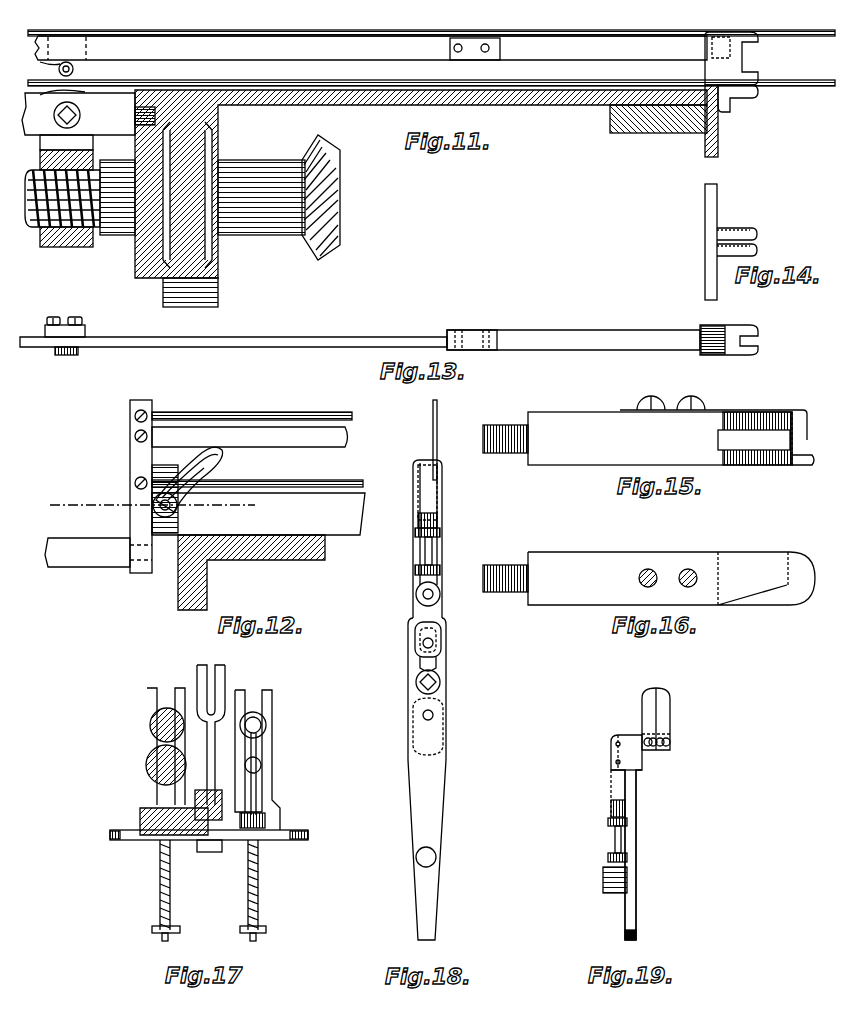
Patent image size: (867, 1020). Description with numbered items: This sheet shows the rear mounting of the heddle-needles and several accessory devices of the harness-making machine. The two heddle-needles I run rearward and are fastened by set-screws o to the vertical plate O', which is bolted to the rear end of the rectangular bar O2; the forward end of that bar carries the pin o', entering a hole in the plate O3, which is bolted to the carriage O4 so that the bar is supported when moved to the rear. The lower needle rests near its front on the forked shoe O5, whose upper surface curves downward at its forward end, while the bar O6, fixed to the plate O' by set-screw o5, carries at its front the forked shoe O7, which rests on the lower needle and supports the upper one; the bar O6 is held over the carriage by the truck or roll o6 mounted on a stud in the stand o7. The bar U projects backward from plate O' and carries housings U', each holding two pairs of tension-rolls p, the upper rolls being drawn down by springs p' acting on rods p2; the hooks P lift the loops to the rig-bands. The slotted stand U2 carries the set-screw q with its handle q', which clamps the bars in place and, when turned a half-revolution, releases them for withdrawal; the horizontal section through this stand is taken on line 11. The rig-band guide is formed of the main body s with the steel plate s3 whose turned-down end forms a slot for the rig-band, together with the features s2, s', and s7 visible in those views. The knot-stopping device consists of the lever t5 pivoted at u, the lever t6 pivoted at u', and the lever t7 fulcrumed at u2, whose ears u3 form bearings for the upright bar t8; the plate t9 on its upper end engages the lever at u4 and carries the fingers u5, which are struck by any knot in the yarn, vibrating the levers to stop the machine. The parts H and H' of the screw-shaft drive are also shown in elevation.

In FIG. 11, the heddle-needle I is at (431, 50).
In FIG. 12, the heddle-needle I is at (257, 442).
In FIG. 11, the bar O6 is at (371, 48).
In FIG. 12, the bar O6 is at (250, 437).
In FIG. 11, the truck or roll o6 is at (73, 69).
In FIG. 11, the stand o7 is at (50, 66).
In FIG. 11, the forked shoe O7 is at (731, 58).
In FIG. 13, the forked shoe O7 is at (389, 332).
In FIG. 11, the plate O3 is at (130, 262).
In FIG. 11, the rectangular bar O2 is at (404, 196).
In FIG. 12, the rectangular bar O2 is at (258, 551).
In FIG. 11, the pin o' is at (136, 115).
In FIG. 11, the carriage O4 is at (66, 142).
In FIG. 11, the worm gear H is at (57, 198).
In FIG. 11, the bevel gear shaft H' is at (232, 197).
In FIG. 11, the forked shoe O5 is at (738, 105).
In FIG. 14, the forked shoe O5 is at (731, 242).
In FIG. 12, the vertical plate O' is at (141, 486).
In FIG. 12, the set-screw o is at (131, 450).
In FIG. 12, the set-screw o5 is at (135, 436).
In FIG. 12, the slotted or forked stand U2 is at (165, 512).
In FIG. 12, the set-screw q is at (173, 509).
In FIG. 12, the handle q' is at (199, 479).
In FIG. 12, the section line 11 is at (152, 505).
In FIG. 12, the bar U is at (87, 552).
In FIG. 15, the rig-band guide main body s is at (648, 438).
In FIG. 16, the rig-band guide main body s is at (649, 578).
In FIG. 15, the steel plate s3 is at (713, 417).
In FIG. 15, the slot s2 is at (755, 438).
In FIG. 15, the plate s' is at (798, 438).
In FIG. 17, the housing U' is at (209, 764).
In FIG. 17, the lifting-hook P is at (150, 748).
In FIG. 17, the fork s7 is at (226, 680).
In FIG. 17, the tension-roll p is at (262, 760).
In FIG. 17, the spring p' is at (218, 885).
In FIG. 17, the rod p2 is at (213, 938).
In FIG. 18, the finger u5 is at (444, 440).
In FIG. 19, the finger u5 is at (656, 719).
In FIG. 18, the lever t5 is at (427, 700).
In FIG. 18, the horizontally-projecting plate t9 is at (437, 470).
In FIG. 18, the lever t7 is at (440, 540).
In FIG. 19, the lever t7 is at (636, 838).
In FIG. 18, the laterally-projecting ear u3 is at (415, 569).
In FIG. 19, the laterally-projecting ear u3 is at (608, 857).
In FIG. 18, the upright bar t8 is at (432, 552).
In FIG. 19, the upright bar t8 is at (615, 838).
In FIG. 18, the fulcrum u2 is at (440, 594).
In FIG. 19, the fulcrum u2 is at (603, 880).
In FIG. 18, the lever t6 is at (441, 660).
In FIG. 19, the lever t6 is at (616, 752).
In FIG. 18, the pivot u' is at (438, 712).
In FIG. 18, the pivot u is at (426, 857).
In FIG. 19, the engagement point u4 is at (636, 837).